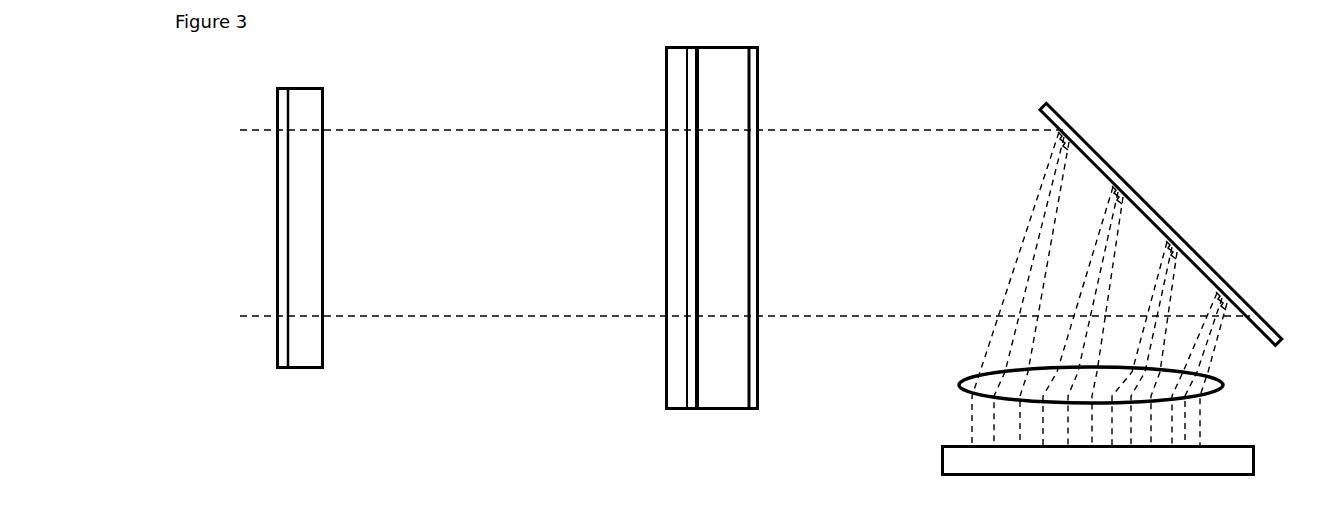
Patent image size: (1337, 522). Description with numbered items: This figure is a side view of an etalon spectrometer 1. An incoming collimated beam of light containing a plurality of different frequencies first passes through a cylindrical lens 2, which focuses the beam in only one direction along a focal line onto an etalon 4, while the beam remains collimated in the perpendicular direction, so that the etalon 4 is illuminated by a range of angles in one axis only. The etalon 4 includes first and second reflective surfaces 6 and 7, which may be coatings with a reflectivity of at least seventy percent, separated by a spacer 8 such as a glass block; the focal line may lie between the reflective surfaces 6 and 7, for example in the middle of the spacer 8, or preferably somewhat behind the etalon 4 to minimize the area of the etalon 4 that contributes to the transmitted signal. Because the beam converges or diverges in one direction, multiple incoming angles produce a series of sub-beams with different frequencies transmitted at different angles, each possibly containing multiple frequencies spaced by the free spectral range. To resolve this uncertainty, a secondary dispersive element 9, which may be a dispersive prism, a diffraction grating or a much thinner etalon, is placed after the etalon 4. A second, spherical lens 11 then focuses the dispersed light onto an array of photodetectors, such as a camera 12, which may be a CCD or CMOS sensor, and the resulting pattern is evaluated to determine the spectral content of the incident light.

The etalon spectrometer 1 is at (518, 30).
The cylindrical lens 2 is at (300, 370).
The etalon 4 is at (702, 251).
The first reflective surface 6 is at (672, 62).
The second reflective surface 7 is at (762, 47).
The spacer 8 is at (712, 230).
The secondary dispersive element 9 is at (1097, 150).
The second lens 11 is at (958, 386).
The camera 12 is at (1245, 460).